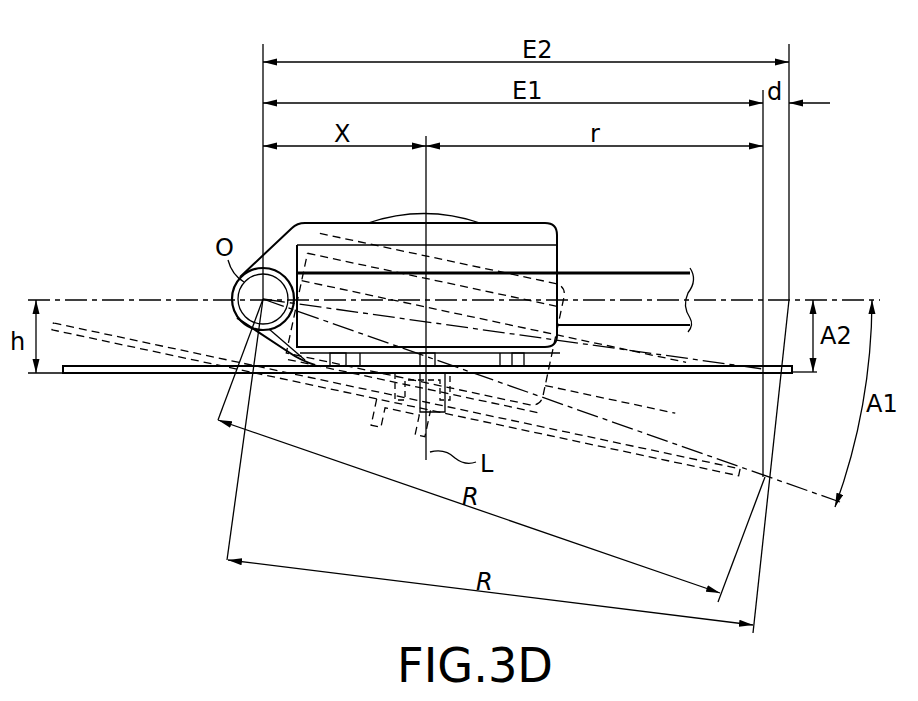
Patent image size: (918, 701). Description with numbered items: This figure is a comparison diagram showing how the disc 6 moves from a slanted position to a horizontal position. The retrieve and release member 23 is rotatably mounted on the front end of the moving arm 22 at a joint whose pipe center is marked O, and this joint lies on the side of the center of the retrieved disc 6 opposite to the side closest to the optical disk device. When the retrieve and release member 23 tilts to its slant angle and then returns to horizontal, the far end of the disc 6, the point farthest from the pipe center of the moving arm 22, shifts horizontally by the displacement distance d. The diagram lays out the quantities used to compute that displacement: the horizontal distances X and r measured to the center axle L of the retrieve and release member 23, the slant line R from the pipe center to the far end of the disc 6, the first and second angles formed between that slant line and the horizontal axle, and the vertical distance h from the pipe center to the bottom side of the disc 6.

The disc 6 is at (133, 374).
The moving arm 22 is at (612, 255).
The retrieve and release member 23 is at (348, 230).